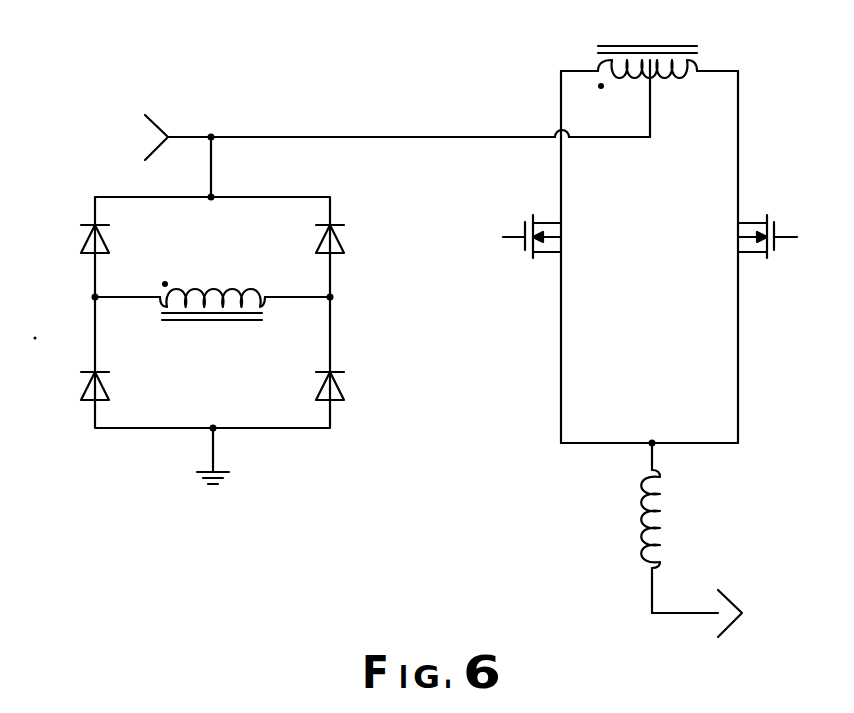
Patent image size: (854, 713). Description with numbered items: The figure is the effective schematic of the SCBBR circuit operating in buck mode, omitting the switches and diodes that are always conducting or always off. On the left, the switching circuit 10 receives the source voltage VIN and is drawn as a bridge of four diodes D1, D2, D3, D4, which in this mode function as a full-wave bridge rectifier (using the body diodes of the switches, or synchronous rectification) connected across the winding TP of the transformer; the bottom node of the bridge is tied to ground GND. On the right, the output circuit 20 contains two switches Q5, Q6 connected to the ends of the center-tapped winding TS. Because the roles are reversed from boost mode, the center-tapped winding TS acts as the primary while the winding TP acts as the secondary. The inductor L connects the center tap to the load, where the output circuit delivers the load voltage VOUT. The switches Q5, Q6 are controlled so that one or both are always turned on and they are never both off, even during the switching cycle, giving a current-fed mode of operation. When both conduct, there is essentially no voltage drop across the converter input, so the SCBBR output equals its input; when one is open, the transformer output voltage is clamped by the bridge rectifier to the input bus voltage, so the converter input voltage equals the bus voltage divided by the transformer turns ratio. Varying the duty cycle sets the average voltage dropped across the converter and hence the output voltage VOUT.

The switching circuit 10 is at (231, 342).
The output circuit 20 is at (637, 326).
The diode D1 is at (74, 245).
The diode D2 is at (354, 245).
The diode D3 is at (74, 391).
The diode D4 is at (354, 391).
The switch Q5 is at (522, 219).
The switch Q6 is at (775, 219).
The inductor L is at (663, 504).
The primary of transformer TP is at (213, 299).
The center-tapped side of transformer TS is at (649, 69).
The source voltage VIN is at (375, 110).
The load voltage VOUT is at (732, 602).
The ground GND is at (234, 465).